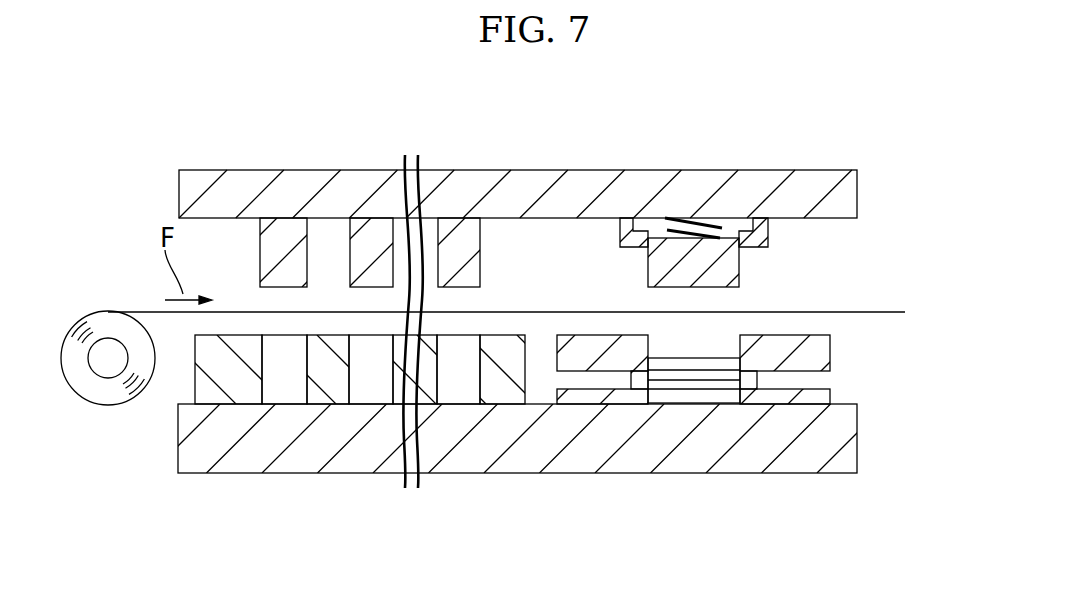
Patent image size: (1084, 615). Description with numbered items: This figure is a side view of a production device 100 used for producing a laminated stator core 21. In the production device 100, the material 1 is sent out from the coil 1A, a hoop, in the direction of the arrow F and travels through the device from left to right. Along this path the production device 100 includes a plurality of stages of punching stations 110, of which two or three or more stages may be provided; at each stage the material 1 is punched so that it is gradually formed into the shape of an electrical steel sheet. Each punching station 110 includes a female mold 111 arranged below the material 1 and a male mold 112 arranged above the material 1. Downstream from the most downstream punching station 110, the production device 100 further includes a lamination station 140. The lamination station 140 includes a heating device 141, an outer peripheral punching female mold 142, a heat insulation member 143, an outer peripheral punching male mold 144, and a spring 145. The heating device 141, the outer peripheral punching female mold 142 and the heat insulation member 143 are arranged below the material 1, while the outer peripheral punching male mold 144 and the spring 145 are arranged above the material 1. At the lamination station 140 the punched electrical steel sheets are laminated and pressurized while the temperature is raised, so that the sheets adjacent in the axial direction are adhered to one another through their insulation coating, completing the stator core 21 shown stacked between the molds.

The production device 100 is at (561, 316).
The punching station 110 is at (518, 209).
The male mold 112 is at (270, 247).
The female mold 111 is at (268, 362).
The lamination station 140 is at (723, 198).
The spring 145 is at (708, 222).
The outer peripheral punching male mold 144 is at (742, 264).
The heat insulation member 143 is at (590, 404).
The outer peripheral punching female mold 142 is at (801, 369).
The heating device 141 is at (757, 380).
The stator core 21 is at (685, 389).
The material 1 is at (482, 352).
The coil 1A is at (83, 397).